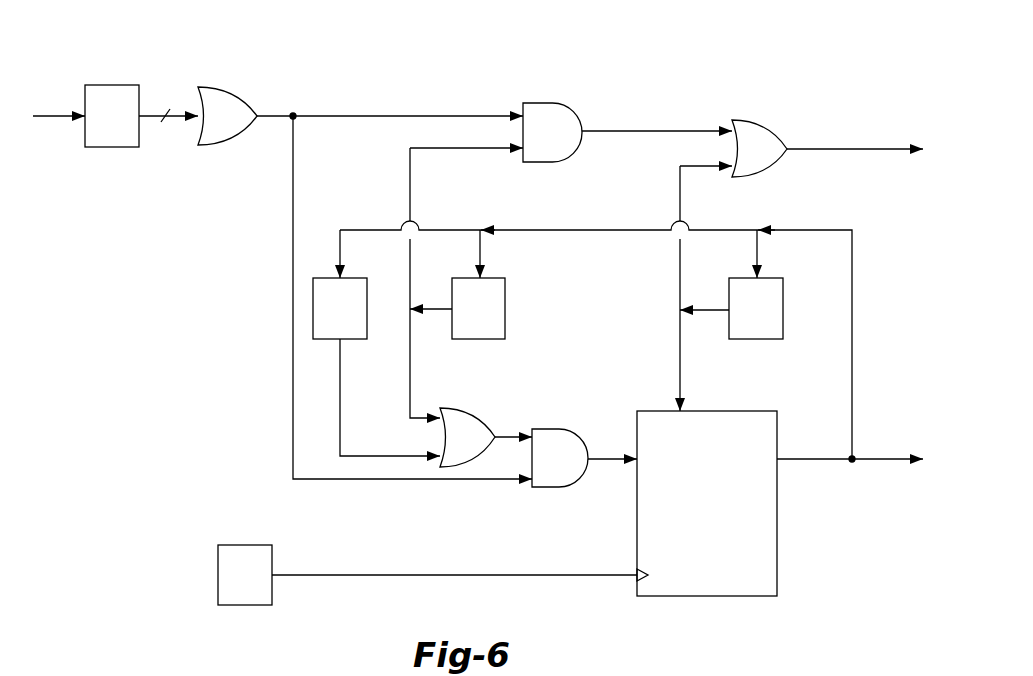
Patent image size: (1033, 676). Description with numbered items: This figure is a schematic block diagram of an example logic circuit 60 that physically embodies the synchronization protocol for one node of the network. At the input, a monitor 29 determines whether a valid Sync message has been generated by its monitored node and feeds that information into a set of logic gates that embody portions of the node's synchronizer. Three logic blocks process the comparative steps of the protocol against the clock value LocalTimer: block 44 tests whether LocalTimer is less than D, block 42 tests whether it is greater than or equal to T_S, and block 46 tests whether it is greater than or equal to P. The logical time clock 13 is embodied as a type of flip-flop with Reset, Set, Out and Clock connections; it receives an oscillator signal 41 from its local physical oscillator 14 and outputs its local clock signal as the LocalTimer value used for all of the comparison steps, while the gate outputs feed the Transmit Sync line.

The synchronization circuit 60 is at (741, 50).
The monitor 29 is at (123, 112).
The logic block 44 is at (353, 331).
The logic block 42 is at (489, 331).
The logic block 46 is at (768, 331).
The logical time clock 13 is at (720, 551).
The local physical oscillator 14 is at (257, 598).
The oscillator signal 41 is at (456, 573).